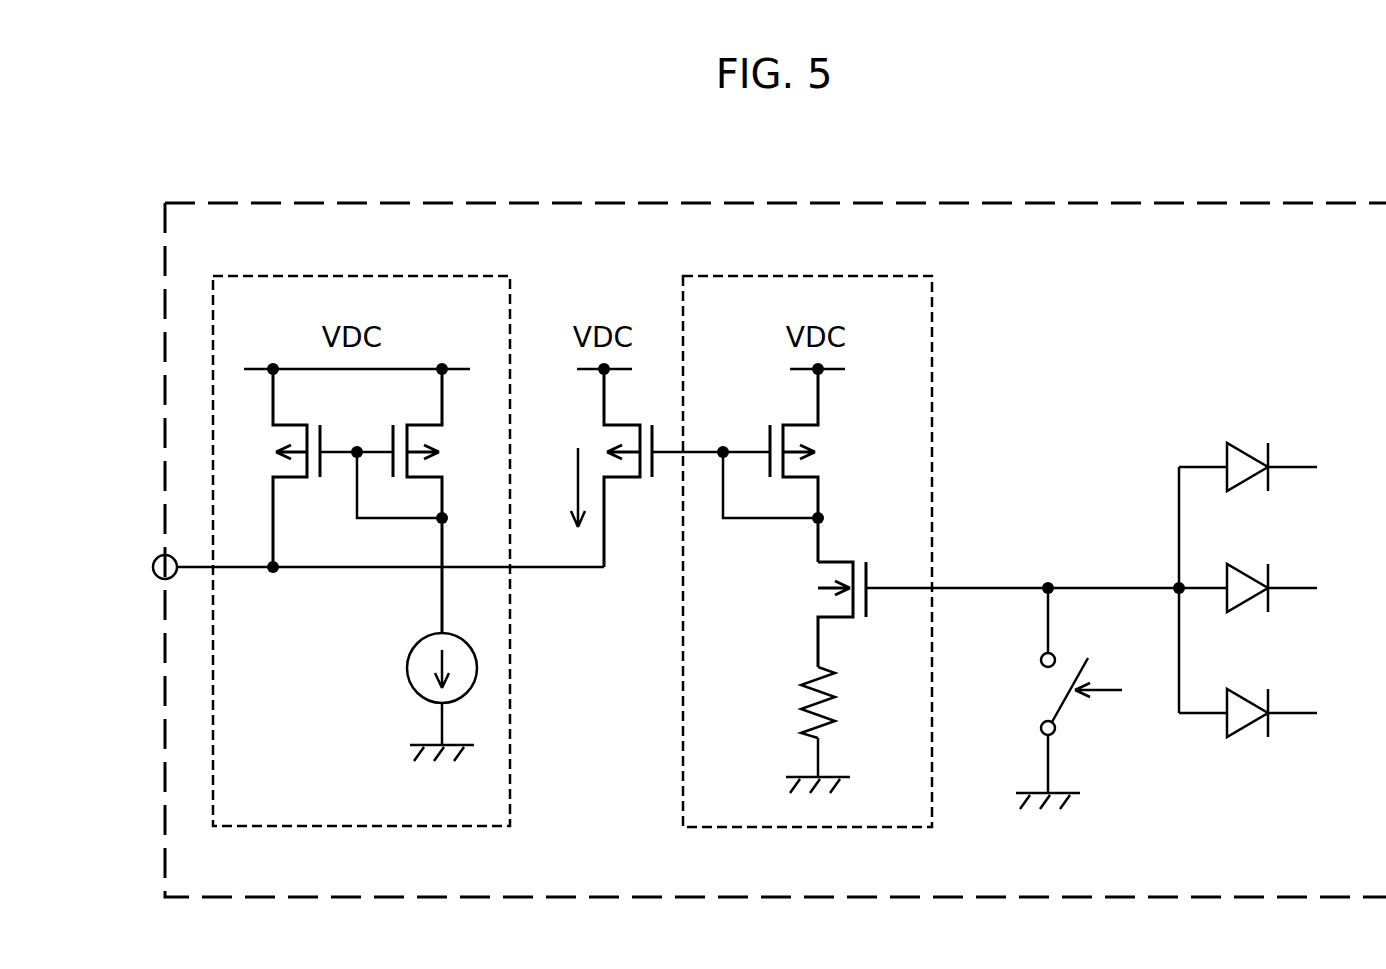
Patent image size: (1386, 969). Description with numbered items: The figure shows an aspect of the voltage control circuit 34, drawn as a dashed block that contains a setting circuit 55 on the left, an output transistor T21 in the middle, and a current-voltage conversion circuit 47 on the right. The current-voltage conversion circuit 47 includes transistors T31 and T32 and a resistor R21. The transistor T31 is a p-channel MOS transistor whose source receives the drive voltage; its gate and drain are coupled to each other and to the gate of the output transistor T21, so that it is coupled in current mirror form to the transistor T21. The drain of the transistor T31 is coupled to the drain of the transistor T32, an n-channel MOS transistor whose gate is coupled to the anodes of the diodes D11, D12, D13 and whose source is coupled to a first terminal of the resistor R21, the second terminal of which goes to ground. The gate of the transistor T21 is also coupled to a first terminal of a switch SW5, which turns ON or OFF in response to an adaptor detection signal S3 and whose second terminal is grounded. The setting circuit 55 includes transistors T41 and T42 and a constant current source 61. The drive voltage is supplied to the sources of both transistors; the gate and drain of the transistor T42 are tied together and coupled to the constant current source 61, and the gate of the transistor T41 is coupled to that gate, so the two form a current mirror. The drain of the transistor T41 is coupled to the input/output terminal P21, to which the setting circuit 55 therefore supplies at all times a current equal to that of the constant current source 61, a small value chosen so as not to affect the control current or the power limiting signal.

The voltage control circuit 34 is at (1268, 203).
The setting circuit 55 is at (473, 277).
The current-voltage conversion circuit 47 is at (932, 311).
The input/output terminal P21 is at (153, 577).
The transistor T41 is at (291, 477).
The transistor T42 is at (427, 425).
The constant current source 61 is at (407, 668).
The output transistor T21 is at (620, 477).
The transistor T31 is at (820, 470).
The transistor T32 is at (835, 562).
The resistor R21 is at (820, 715).
The switch SW5 is at (1045, 690).
The adaptor detection signal S3 is at (1119, 692).
The diode D11 is at (1273, 460).
The diode D12 is at (1273, 581).
The diode D13 is at (1273, 706).